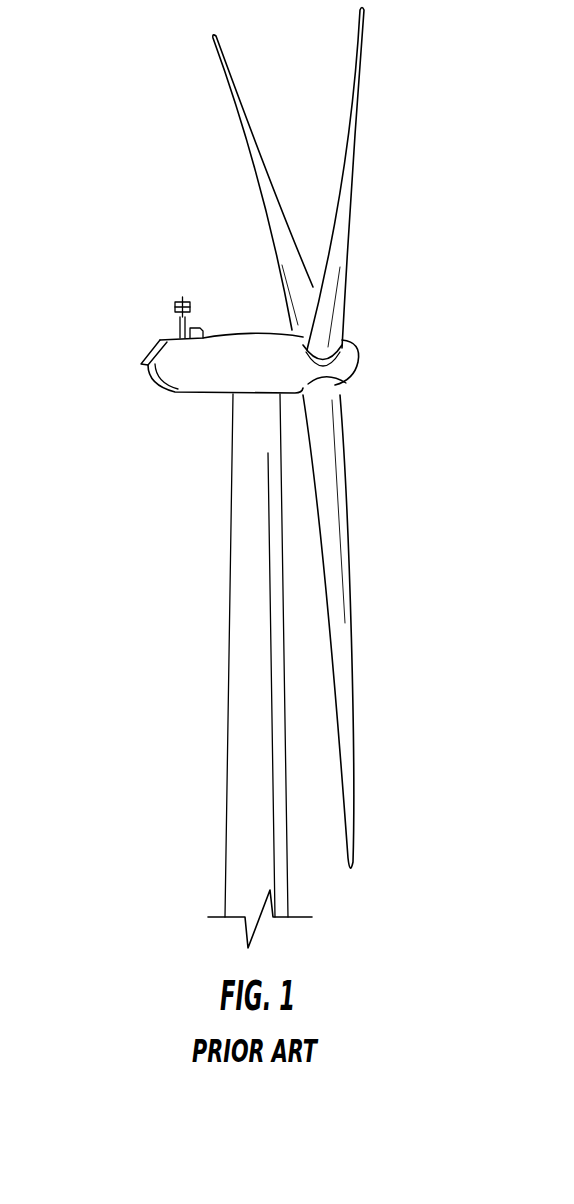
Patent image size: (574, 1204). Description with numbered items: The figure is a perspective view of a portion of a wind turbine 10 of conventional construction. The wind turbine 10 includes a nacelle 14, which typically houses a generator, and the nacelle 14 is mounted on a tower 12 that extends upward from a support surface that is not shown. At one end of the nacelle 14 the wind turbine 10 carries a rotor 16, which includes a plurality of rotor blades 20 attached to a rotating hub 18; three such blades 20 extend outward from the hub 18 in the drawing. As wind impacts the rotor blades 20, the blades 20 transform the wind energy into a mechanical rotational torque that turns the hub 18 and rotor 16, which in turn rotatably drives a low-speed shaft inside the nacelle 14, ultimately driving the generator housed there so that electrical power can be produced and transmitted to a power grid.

The wind turbine 10 is at (106, 109).
The tower 12 is at (232, 714).
The nacelle 14 is at (196, 408).
The rotor 16 is at (384, 357).
The rotating hub 18 is at (357, 367).
The rotor blades 20 is at (265, 162).